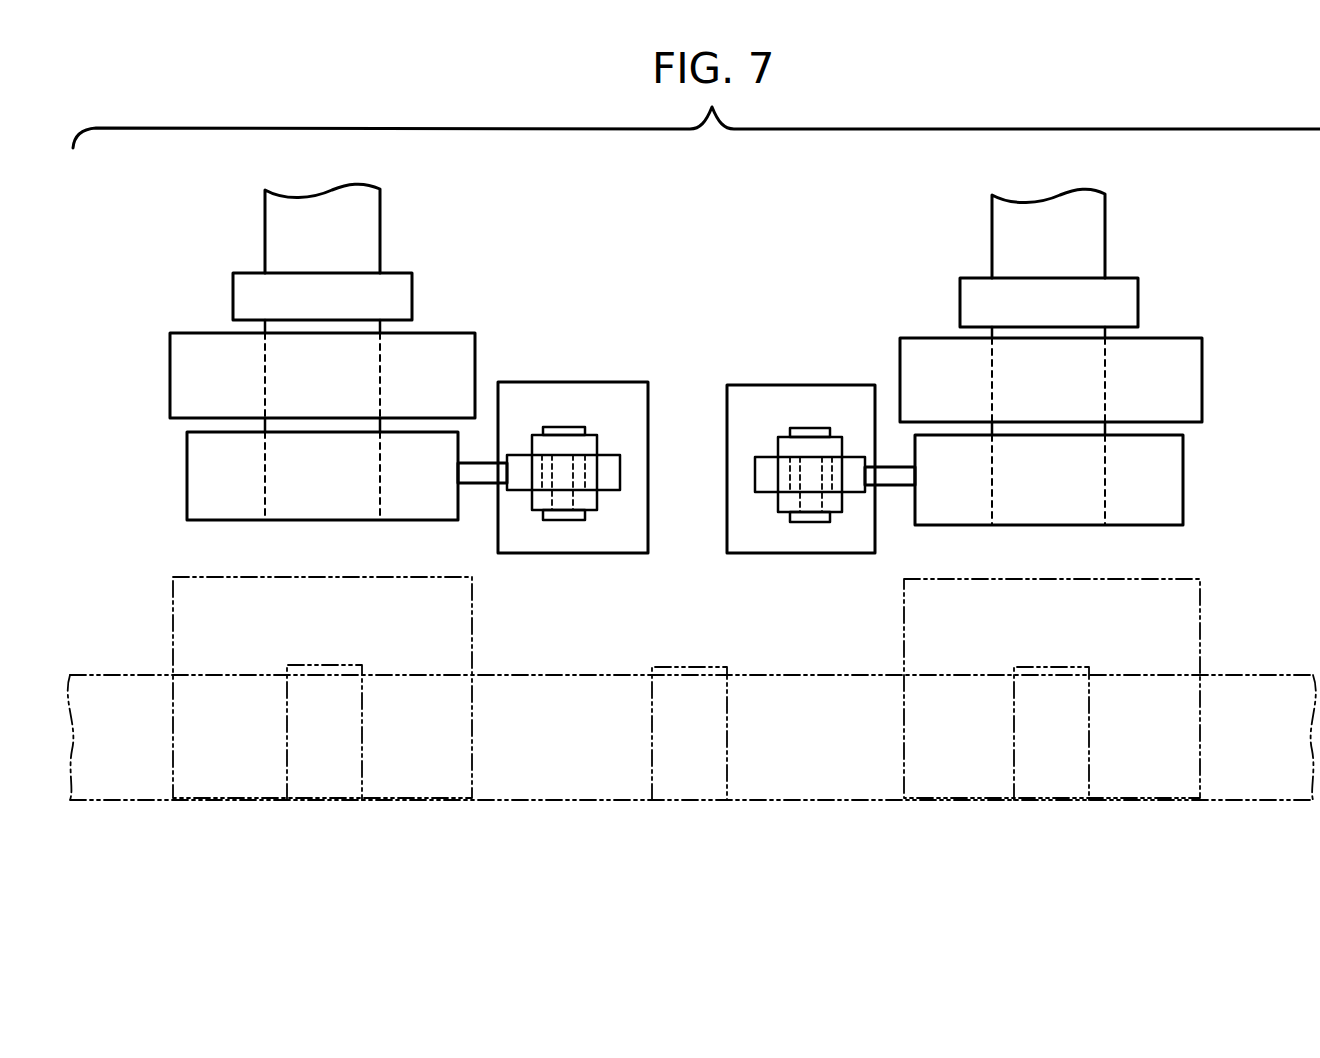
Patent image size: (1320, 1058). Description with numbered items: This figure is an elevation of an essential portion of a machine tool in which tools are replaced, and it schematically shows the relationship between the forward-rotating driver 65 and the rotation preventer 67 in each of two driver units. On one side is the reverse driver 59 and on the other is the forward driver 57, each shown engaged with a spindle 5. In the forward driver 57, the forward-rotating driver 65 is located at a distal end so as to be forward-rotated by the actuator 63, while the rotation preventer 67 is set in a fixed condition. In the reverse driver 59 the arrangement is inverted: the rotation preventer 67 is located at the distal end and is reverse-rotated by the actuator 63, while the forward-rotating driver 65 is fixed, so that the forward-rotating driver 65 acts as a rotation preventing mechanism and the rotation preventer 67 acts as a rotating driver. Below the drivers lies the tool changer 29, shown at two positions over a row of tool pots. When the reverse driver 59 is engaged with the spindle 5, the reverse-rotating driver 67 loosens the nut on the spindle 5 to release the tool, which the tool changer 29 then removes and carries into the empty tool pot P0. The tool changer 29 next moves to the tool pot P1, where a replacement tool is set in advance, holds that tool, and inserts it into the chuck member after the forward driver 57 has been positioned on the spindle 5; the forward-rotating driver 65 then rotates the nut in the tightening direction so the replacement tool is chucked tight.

The spindle 5 is at (368, 205).
The forward driver 57 is at (1176, 313).
The reverse driver 59 is at (510, 320).
The actuator 63 is at (613, 398).
The forward-rotating driver 65 is at (186, 370).
The rotation preventer 67 is at (204, 464).
The tool changer 29 is at (472, 604).
The tool pot P0 is at (345, 787).
The tool pot P1 is at (1070, 790).